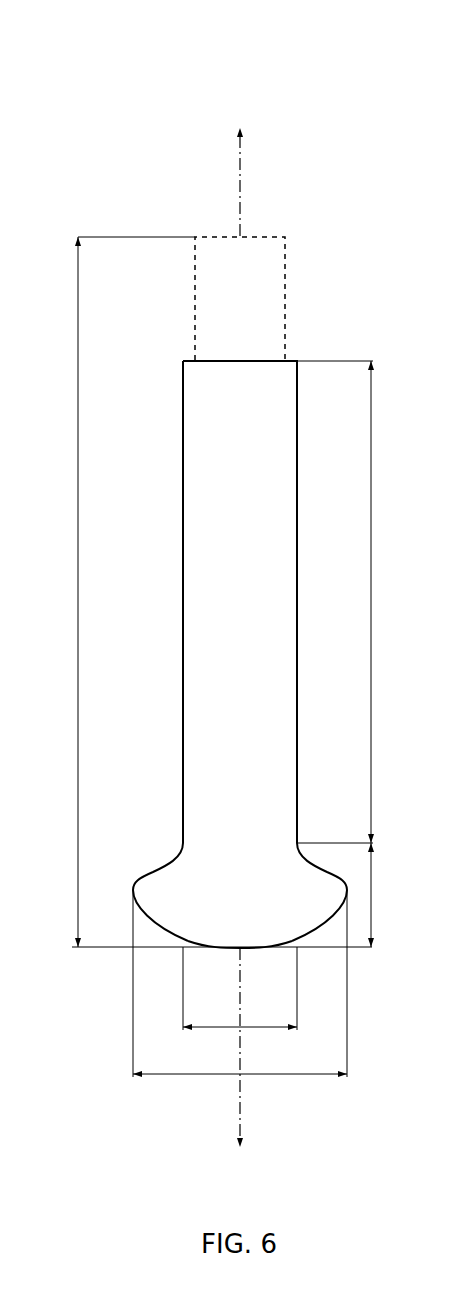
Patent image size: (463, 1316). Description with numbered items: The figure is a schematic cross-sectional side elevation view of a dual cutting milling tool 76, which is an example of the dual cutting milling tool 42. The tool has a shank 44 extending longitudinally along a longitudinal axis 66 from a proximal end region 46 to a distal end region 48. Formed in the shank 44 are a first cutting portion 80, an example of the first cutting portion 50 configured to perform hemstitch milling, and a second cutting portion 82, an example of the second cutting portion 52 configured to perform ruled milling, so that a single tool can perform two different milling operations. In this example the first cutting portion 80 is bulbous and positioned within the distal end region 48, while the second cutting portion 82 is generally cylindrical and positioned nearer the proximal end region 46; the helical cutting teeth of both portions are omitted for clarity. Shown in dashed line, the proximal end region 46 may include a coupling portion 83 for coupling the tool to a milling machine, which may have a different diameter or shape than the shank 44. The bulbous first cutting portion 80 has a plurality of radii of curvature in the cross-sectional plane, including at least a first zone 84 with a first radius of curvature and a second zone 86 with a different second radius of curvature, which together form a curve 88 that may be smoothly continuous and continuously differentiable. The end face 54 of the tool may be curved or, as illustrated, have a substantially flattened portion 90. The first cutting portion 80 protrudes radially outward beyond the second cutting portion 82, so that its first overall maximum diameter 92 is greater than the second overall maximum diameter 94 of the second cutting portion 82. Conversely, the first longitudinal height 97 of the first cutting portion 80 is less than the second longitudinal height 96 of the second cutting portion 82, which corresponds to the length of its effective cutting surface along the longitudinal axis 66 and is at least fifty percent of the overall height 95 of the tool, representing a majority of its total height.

The dual cutting milling tool 42 is at (140, 57).
The shank 44 is at (287, 461).
The proximal end region 46 is at (165, 285).
The distal end region 48 is at (335, 930).
The first cutting portion 50 is at (97, 962).
The second cutting portion 52 is at (135, 602).
The end face 54 is at (222, 948).
The longitudinal axis 66 is at (240, 170).
The dual cutting milling tool 76 is at (168, 123).
The first cutting portion 80 is at (113, 918).
The second cutting portion 82 is at (163, 607).
The coupling portion 83 is at (262, 308).
The first zone 84 is at (137, 857).
The second zone 86 is at (162, 940).
The curve 88 is at (133, 887).
The flattened portion 90 is at (250, 948).
The first overall maximum diameter 92 is at (255, 1075).
The second overall maximum diameter 94 is at (255, 1028).
The overall height 95 is at (78, 583).
The second longitudinal height 96 is at (372, 583).
The first longitudinal height 97 is at (372, 888).